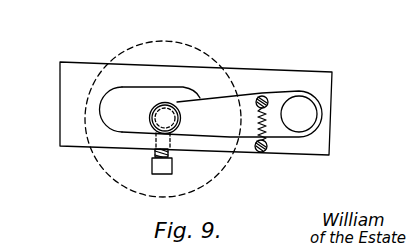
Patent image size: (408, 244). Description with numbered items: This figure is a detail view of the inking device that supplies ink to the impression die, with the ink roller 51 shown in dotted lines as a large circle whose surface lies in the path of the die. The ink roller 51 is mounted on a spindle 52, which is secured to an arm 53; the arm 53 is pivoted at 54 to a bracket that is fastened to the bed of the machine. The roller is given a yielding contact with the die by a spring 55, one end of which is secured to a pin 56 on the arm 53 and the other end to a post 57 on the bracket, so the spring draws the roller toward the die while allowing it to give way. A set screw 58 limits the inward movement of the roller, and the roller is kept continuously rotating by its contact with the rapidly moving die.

The ink roller 51 is at (163, 120).
The spindle 52 is at (174, 118).
The arm 53 is at (222, 114).
The pivot 54 is at (299, 114).
The spring 55 is at (264, 124).
The pin 56 is at (262, 96).
The post 57 is at (262, 152).
The set screw 58 is at (152, 164).